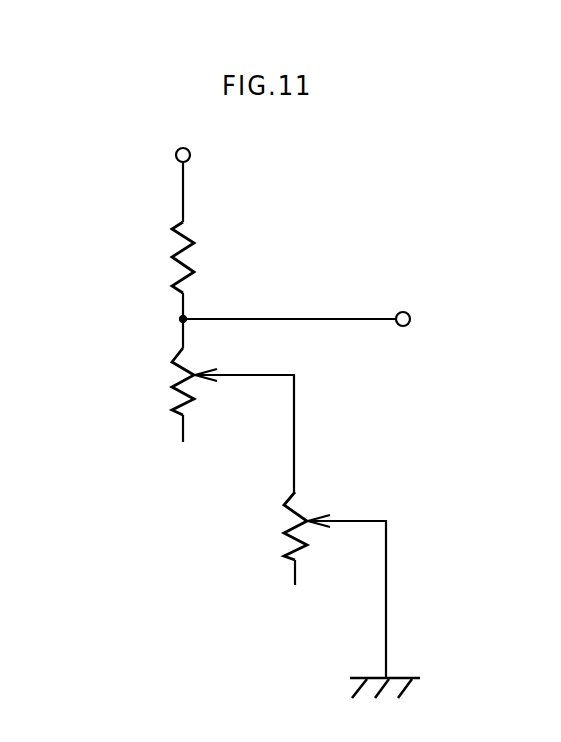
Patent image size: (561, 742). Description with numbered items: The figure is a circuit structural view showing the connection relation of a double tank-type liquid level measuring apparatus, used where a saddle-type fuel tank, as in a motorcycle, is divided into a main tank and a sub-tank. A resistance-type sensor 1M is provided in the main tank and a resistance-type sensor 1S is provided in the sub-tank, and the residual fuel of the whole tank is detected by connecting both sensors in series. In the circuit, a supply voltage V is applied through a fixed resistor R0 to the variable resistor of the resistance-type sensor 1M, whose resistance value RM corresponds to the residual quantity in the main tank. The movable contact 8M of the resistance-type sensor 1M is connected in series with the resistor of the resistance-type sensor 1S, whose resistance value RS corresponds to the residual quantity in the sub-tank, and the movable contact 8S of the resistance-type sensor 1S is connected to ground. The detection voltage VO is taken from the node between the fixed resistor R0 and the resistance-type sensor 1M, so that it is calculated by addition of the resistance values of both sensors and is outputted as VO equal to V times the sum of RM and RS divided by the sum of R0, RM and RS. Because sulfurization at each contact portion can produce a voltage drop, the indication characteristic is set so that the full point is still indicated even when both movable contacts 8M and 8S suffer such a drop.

The supply voltage V is at (190, 175).
The fixed resistor R0 is at (193, 250).
The detection voltage VO is at (305, 309).
The resistance value of main tank sensor RM is at (197, 390).
The movable contact 8M is at (270, 374).
The resistance-type sensor 1M is at (165, 397).
The resistance value of sub-tank sensor RS is at (308, 533).
The movable contact 8S is at (352, 520).
The resistance-type sensor 1S is at (280, 528).